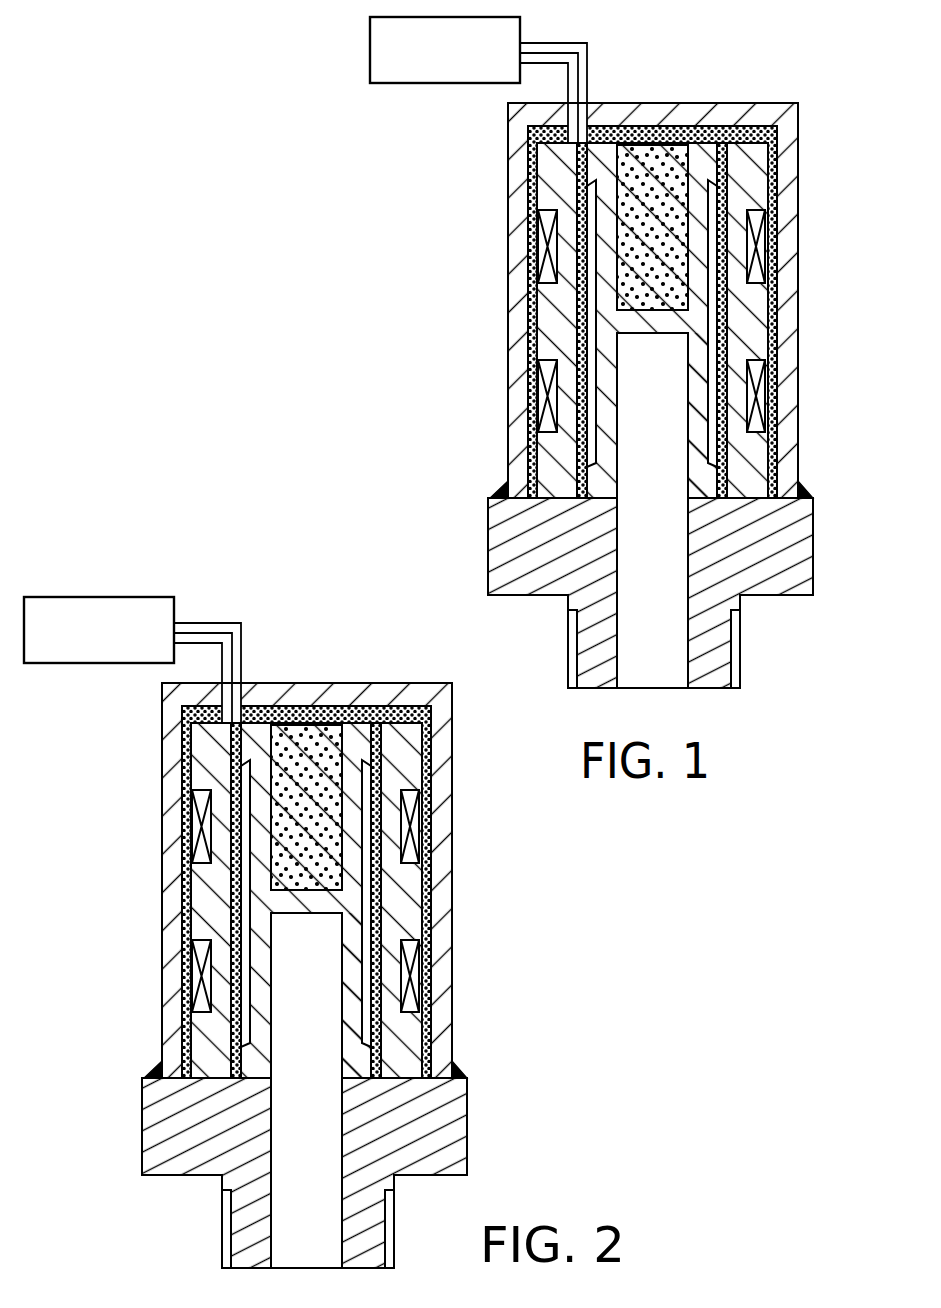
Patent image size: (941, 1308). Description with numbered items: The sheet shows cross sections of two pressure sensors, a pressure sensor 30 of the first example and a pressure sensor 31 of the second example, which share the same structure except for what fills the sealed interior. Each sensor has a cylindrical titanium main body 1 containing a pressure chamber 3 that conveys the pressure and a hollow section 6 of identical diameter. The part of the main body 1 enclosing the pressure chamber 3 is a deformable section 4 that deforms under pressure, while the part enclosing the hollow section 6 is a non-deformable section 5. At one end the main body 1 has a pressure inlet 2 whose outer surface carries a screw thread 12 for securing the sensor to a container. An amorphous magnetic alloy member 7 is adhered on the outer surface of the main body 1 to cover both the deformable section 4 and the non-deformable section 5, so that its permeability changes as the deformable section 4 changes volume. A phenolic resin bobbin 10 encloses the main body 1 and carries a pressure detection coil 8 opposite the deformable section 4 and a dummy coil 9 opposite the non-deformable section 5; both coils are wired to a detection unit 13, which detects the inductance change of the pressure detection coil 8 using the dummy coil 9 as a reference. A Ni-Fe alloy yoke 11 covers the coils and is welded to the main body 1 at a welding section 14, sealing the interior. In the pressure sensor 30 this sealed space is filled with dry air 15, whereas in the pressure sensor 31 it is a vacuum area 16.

In FIG. 1, the main body 1 is at (815, 549).
In FIG. 2, the main body 1 is at (319, 1173).
In FIG. 1, the pressure inlet 2 is at (660, 688).
In FIG. 2, the pressure inlet 2 is at (315, 1284).
In FIG. 1, the pressure chamber 3 is at (678, 412).
In FIG. 2, the pressure chamber 3 is at (375, 1090).
In FIG. 1, the deformable section 4 is at (700, 462).
In FIG. 2, the deformable section 4 is at (411, 995).
In FIG. 1, the non-deformable section 5 is at (698, 208).
In FIG. 2, the non-deformable section 5 is at (360, 900).
In FIG. 1, the hollow section 6 is at (675, 270).
In FIG. 2, the hollow section 6 is at (375, 807).
In FIG. 1, the amorphous magnetic alloy member 7 is at (728, 298).
In FIG. 2, the amorphous magnetic alloy member 7 is at (355, 900).
In FIG. 1, the pressure detection coil 8 is at (718, 365).
In FIG. 2, the pressure detection coil 8 is at (360, 903).
In FIG. 1, the dummy coil 9 is at (770, 236).
In FIG. 2, the dummy coil 9 is at (336, 901).
In FIG. 1, the bobbin 10 is at (752, 167).
In FIG. 2, the bobbin 10 is at (342, 900).
In FIG. 1, the yoke 11 is at (740, 104).
In FIG. 2, the yoke 11 is at (321, 850).
In FIG. 1, the screw thread 12 is at (742, 651).
In FIG. 2, the screw thread 12 is at (340, 1229).
In FIG. 1, the detection unit 13 is at (519, 28).
In FIG. 2, the detection unit 13 is at (132, 656).
In FIG. 1, the welding section 14 is at (800, 494).
In FIG. 2, the welding section 14 is at (320, 1063).
In FIG. 1, the dry air 15 is at (540, 135).
In FIG. 2, the vacuum area 16 is at (268, 891).
In FIG. 1, the pressure sensor 30 is at (606, 364).
In FIG. 2, the pressure sensor 31 is at (260, 926).